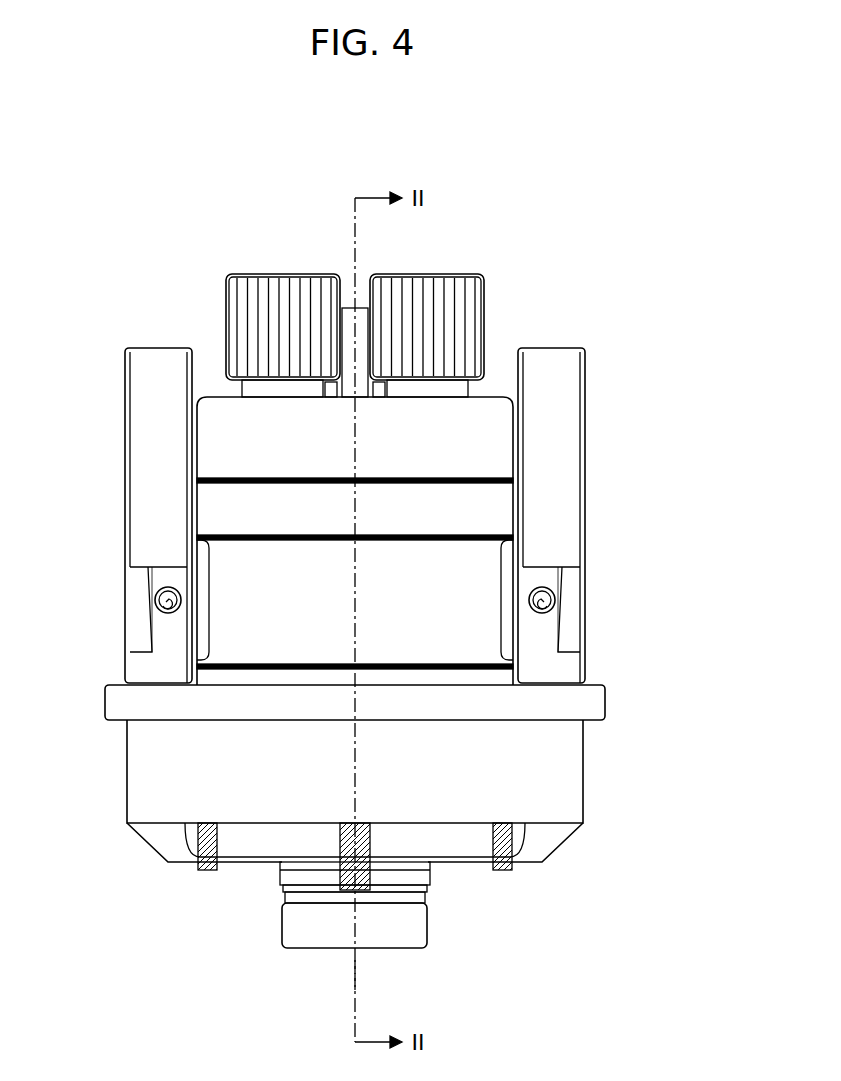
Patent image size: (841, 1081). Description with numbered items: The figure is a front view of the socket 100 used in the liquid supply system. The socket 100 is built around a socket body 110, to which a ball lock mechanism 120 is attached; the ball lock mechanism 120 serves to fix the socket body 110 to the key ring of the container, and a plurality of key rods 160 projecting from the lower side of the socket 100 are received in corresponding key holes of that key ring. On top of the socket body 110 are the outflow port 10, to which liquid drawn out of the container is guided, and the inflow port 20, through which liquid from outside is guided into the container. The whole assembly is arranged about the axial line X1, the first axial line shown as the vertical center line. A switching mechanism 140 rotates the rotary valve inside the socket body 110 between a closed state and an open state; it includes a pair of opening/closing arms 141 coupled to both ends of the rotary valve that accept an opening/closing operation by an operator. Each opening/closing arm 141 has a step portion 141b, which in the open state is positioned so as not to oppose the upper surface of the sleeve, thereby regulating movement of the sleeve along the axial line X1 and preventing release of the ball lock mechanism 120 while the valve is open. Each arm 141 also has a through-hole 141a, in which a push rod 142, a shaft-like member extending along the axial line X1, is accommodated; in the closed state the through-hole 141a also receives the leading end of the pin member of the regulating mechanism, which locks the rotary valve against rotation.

The outflow port 10 is at (462, 274).
The inflow port 20 is at (258, 274).
The socket 100 is at (672, 228).
The socket body 110 is at (515, 446).
The ball lock mechanism 120 is at (607, 701).
The switching mechanism 140 is at (605, 377).
The opening/closing arm 141 is at (549, 348).
The through-hole 141a is at (165, 612).
The step portion 141b is at (138, 636).
The push rod 142 is at (158, 592).
The key rod 160 is at (208, 872).
The axial line X1 is at (345, 975).